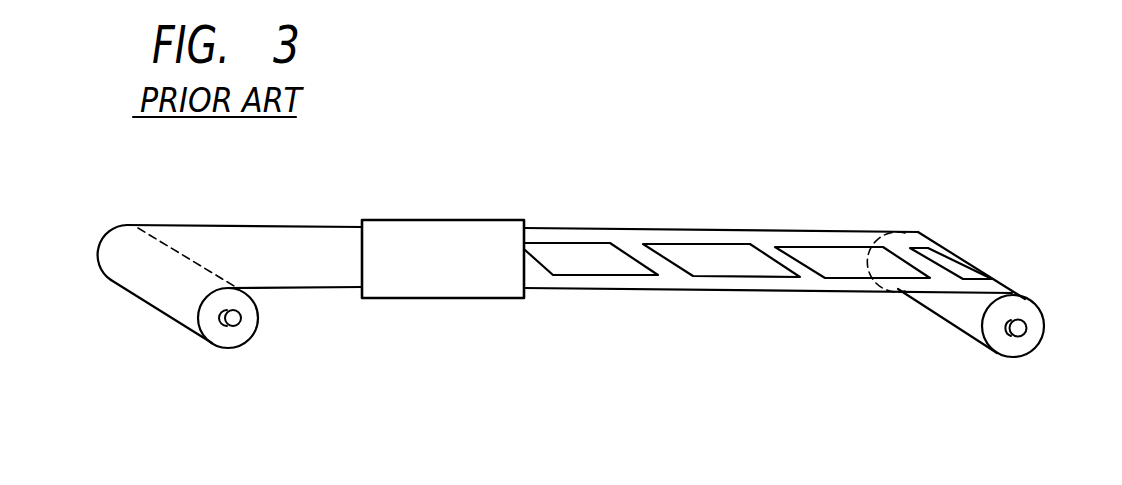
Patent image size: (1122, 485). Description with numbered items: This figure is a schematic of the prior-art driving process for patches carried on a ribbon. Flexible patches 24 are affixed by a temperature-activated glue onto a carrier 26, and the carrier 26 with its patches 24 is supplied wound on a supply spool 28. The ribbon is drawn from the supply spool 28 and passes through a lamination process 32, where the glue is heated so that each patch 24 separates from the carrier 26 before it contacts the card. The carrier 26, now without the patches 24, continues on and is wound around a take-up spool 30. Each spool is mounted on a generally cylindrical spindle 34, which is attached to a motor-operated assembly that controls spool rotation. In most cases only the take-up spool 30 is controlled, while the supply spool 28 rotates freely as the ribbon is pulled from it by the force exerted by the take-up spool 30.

The flexible patch 24 is at (708, 257).
The carrier 26 is at (820, 242).
The supply spool 28 is at (1035, 333).
The take-up spool 30 is at (254, 322).
The lamination process 32 is at (440, 220).
The spindle 34 is at (242, 332).